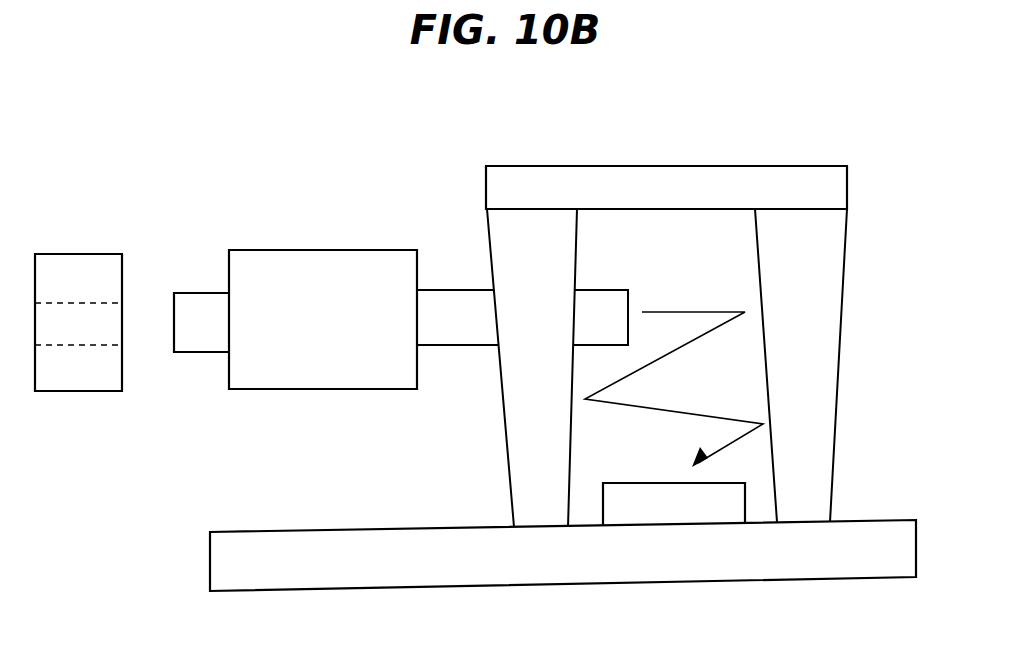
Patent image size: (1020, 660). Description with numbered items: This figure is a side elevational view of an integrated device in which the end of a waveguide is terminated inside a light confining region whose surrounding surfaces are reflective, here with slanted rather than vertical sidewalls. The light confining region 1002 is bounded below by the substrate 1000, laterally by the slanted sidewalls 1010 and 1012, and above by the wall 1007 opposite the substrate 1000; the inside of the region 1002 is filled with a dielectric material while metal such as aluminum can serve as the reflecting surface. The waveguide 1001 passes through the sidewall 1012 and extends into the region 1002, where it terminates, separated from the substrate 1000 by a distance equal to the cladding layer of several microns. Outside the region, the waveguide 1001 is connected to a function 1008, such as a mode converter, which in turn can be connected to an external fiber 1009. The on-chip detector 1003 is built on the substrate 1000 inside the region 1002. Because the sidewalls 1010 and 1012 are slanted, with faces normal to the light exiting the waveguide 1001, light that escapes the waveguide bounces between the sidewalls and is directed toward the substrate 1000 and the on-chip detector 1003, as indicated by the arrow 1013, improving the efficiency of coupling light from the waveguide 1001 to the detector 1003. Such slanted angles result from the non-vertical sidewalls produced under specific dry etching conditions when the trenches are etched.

The substrate 1000 is at (593, 564).
The waveguide 1001 is at (487, 326).
The light confining region 1002 is at (690, 247).
The on-chip detector 1003 is at (702, 511).
The wall 1007 is at (688, 192).
The function 1008 is at (347, 331).
The external fiber 1009 is at (107, 334).
The slanted sidewall 1010 is at (772, 292).
The slanted sidewall 1012 is at (533, 259).
The arrow 1013 is at (674, 376).